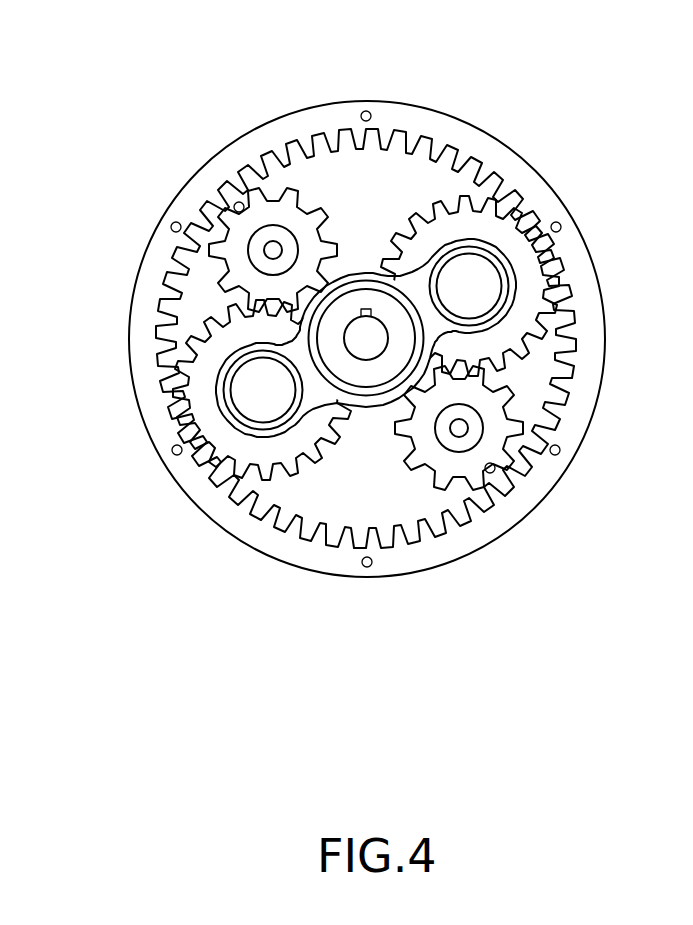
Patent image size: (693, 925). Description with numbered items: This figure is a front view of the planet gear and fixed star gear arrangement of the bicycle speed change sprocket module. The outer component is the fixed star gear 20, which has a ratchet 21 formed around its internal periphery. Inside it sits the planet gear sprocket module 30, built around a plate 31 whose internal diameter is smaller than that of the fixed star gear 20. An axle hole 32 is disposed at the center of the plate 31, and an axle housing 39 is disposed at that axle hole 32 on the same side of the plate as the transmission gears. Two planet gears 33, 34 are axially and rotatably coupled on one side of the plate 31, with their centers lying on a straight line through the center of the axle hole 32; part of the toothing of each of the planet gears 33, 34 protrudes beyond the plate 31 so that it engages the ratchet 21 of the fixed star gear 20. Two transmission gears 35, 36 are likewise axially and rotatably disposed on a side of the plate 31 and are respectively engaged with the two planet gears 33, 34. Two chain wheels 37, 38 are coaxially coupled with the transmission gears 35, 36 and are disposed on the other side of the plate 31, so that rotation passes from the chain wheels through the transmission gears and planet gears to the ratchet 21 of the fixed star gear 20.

The fixed star gear 20 is at (470, 140).
The ratchet 21 is at (378, 147).
The planet gear sprocket module 30 is at (367, 319).
The plate 31 is at (352, 276).
The axle hole 32 is at (355, 350).
The planet gear 33 is at (525, 256).
The planet gear 34 is at (205, 416).
The transmission gear 35 is at (492, 473).
The transmission gear 36 is at (238, 202).
The chain wheel 37 is at (237, 250).
The chain wheel 38 is at (495, 430).
The axle housing 39 is at (372, 378).